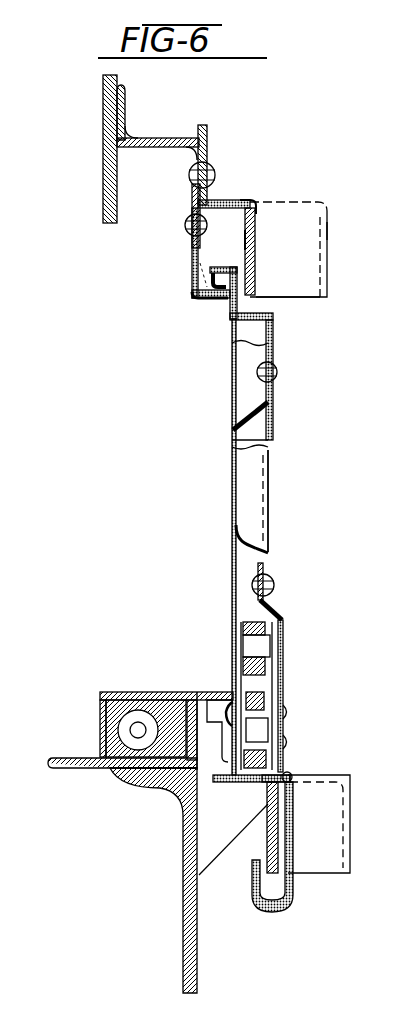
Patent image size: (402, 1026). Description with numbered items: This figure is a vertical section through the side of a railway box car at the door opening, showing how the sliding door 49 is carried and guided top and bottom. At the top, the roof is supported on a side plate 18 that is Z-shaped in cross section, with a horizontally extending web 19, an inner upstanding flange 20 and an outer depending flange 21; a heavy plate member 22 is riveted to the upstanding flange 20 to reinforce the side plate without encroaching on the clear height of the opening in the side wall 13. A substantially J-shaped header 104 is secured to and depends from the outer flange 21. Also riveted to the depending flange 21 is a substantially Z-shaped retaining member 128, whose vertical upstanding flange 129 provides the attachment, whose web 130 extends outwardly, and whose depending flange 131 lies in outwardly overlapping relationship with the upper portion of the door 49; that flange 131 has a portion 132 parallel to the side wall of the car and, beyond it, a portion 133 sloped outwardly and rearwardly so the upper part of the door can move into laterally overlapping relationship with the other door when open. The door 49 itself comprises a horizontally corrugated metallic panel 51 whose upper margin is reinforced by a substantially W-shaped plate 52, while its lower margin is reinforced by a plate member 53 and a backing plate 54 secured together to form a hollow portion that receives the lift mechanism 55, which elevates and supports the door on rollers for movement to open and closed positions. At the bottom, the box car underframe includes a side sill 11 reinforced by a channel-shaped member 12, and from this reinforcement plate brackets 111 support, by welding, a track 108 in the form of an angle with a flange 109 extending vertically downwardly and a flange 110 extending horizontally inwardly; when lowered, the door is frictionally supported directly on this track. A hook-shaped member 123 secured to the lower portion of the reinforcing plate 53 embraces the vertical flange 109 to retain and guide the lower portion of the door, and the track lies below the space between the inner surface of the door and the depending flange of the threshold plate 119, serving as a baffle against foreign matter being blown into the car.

The side sill 11 is at (200, 756).
The channel-shaped member 12 is at (185, 970).
The side wall 13 is at (318, 860).
The side plate 18 is at (128, 133).
The horizontally extending web 19 is at (167, 137).
The inner upstanding flange 20 is at (124, 95).
The outer depending flange 21 is at (195, 196).
The heavy plate member 22 is at (105, 172).
The door 49 is at (262, 423).
The horizontally corrugated metallic panel 51 is at (269, 484).
The W-shaped plate 52 is at (273, 318).
The plate member 53 is at (282, 616).
The backing plate 54 is at (233, 597).
The lift mechanism 55 is at (272, 679).
The J-shaped header 104 is at (197, 297).
The track 108 is at (268, 786).
The vertical flange 109 is at (267, 825).
The horizontal flange 110 is at (227, 782).
The plate bracket 111 is at (217, 850).
The threshold plate 119 is at (138, 692).
The hook-shaped member 123 is at (288, 770).
The Z-shaped retaining member 128 is at (251, 202).
The vertical upstanding flange 129 is at (207, 143).
The outwardly extending web 130 is at (225, 200).
The depending flange 131 is at (253, 238).
The parallel portion 132 is at (256, 263).
The sloped portion 133 is at (303, 278).